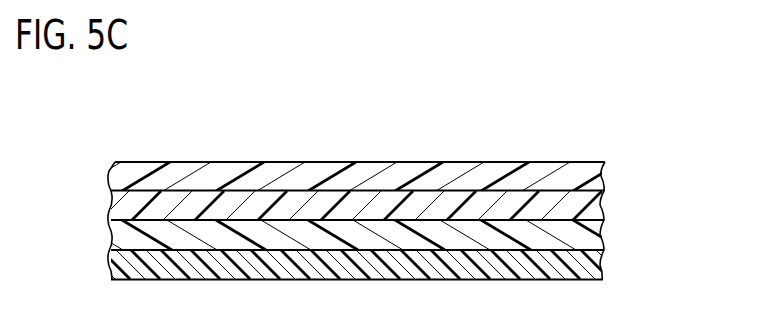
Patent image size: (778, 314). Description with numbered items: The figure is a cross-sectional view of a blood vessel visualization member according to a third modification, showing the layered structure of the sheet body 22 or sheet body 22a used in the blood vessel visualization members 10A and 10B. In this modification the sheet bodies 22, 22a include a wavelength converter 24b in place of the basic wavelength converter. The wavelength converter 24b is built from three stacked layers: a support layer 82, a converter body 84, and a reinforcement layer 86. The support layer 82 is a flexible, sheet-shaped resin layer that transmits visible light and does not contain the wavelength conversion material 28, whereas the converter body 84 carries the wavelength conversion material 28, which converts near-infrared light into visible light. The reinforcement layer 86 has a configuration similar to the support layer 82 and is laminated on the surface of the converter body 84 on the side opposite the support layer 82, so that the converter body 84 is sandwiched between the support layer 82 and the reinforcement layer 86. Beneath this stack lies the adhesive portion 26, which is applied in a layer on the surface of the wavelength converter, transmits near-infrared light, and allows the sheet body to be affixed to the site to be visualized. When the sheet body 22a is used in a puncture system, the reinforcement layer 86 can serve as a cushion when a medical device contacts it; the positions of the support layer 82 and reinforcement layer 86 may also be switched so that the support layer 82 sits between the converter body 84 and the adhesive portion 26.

The blood vessel visualization member 10A is at (391, 174).
The blood vessel visualization member 10B is at (413, 174).
The sheet body 22 is at (360, 126).
The sheet body 22a is at (233, 159).
The wavelength converter 24b is at (413, 206).
The support layer 82 is at (603, 176).
The converter body 84 is at (402, 205).
The wavelength conversion material 28 is at (603, 203).
The reinforcement layer 86 is at (388, 240).
The adhesive portion 26 is at (603, 266).